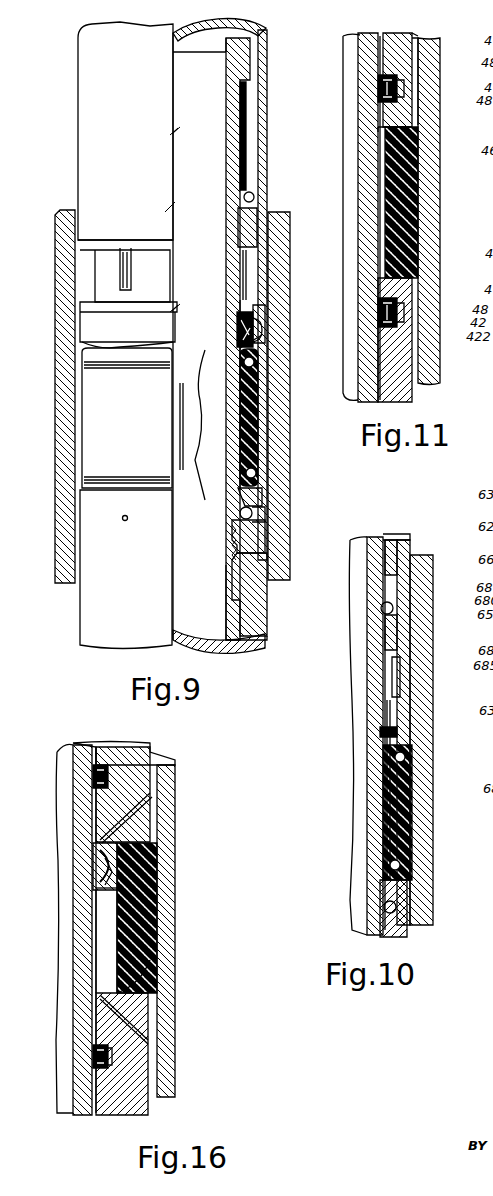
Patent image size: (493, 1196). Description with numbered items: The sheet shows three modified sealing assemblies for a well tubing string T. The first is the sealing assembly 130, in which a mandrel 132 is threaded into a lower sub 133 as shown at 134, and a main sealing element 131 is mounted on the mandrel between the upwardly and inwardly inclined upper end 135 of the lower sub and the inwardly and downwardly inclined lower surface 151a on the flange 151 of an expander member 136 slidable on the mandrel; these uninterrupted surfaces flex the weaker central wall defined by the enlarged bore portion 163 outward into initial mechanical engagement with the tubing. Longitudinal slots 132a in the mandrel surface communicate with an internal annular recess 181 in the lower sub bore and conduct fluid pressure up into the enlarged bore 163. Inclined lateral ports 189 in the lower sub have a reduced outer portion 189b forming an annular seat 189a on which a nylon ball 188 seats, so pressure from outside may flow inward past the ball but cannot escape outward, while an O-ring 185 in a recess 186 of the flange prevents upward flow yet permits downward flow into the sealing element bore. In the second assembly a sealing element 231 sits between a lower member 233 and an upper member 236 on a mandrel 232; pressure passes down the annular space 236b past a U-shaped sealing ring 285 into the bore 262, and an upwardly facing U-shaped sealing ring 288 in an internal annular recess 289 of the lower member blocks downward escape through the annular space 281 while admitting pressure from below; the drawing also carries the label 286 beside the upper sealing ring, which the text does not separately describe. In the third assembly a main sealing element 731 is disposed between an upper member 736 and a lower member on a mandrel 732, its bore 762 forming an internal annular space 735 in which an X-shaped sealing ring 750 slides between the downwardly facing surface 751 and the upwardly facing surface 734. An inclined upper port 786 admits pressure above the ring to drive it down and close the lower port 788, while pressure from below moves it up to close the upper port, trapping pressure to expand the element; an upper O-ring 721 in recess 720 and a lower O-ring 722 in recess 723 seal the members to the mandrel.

In FIG. 9, the sealing assembly 130 is at (78, 152).
In FIG. 10, the sealing assembly 130 is at (345, 700).
In FIG. 9, the main sealing element 131 is at (95, 410).
In FIG. 10, the main sealing element 131 is at (408, 788).
In FIG. 9, the mandrel 132 is at (192, 360).
In FIG. 9, the longitudinally extending slots or grooves 132a is at (180, 405).
In FIG. 10, the longitudinally extending slots or grooves 132a is at (380, 820).
In FIG. 9, the lower sub 133 is at (262, 612).
In FIG. 10, the lower sub 133 is at (400, 930).
In FIG. 9, the threaded connection 134 is at (256, 553).
In FIG. 9, the upper end of the lower sub 135 is at (256, 478).
In FIG. 9, the expander member 136 is at (242, 283).
In FIG. 9, the flange 151 is at (254, 337).
In FIG. 9, the lower surface of the flange 151a is at (250, 348).
In FIG. 9, the enlarged portion of the bore of the sealing element 163 is at (250, 418).
In FIG. 10, the enlarged portion of the bore of the sealing element 163 is at (400, 815).
In FIG. 9, the internal annular recess 181 is at (258, 498).
In FIG. 9, the O-ring sealing element 185 is at (240, 320).
In FIG. 9, the recess 186 is at (256, 316).
In FIG. 9, the spherical closure element 188 is at (236, 526).
In FIG. 10, the spherical closure element 188 is at (383, 906).
In FIG. 9, the lateral ports 189 is at (238, 515).
In FIG. 9, the annular seat 189a is at (236, 541).
In FIG. 9, the outer portion of the ports 189b is at (258, 516).
In FIG. 9, the flow conductor T is at (278, 216).
In FIG. 11, the flow conductor T is at (442, 116).
In FIG. 10, the flow conductor T is at (425, 566).
In FIG. 16, the flow conductor T is at (166, 910).
In FIG. 11, the sealing element 231 is at (416, 190).
In FIG. 11, the mandrel 232 is at (360, 50).
In FIG. 11, the lower member 233 is at (400, 382).
In FIG. 11, the upper member 236 is at (405, 62).
In FIG. 11, the annular space 236b is at (383, 70).
In FIG. 11, the bore of the sealing element 262 is at (383, 140).
In FIG. 11, the annular space 281 is at (358, 400).
In FIG. 11, the U-shaped annular sealing ring 285 is at (385, 92).
In FIG. 11, the seal groove 286 is at (397, 92).
In FIG. 11, the U-shaped sealing ring 288 is at (397, 316).
In FIG. 11, the internal annular recess 289 is at (396, 298).
In FIG. 16, the internal annular recess 720 is at (96, 778).
In FIG. 16, the upper O-ring 721 is at (98, 783).
In FIG. 16, the lower O-ring sealing ring 722 is at (108, 1060).
In FIG. 16, the internal annular recess 723 is at (110, 1047).
In FIG. 16, the main sealing element 731 is at (150, 923).
In FIG. 16, the mandrel 732 is at (78, 1115).
In FIG. 16, the upwardly facing surface of the lower member 734 is at (150, 965).
In FIG. 16, the internal annular space 735 is at (100, 960).
In FIG. 16, the upper member 736 is at (148, 768).
In FIG. 16, the X-shaped sealing ring 750 is at (113, 880).
In FIG. 16, the downwardly facing surface of the upper member 751 is at (155, 870).
In FIG. 16, the bore of the sealing element 762 is at (112, 940).
In FIG. 16, the port 786 is at (150, 790).
In FIG. 16, the lower port 788 is at (140, 1010).